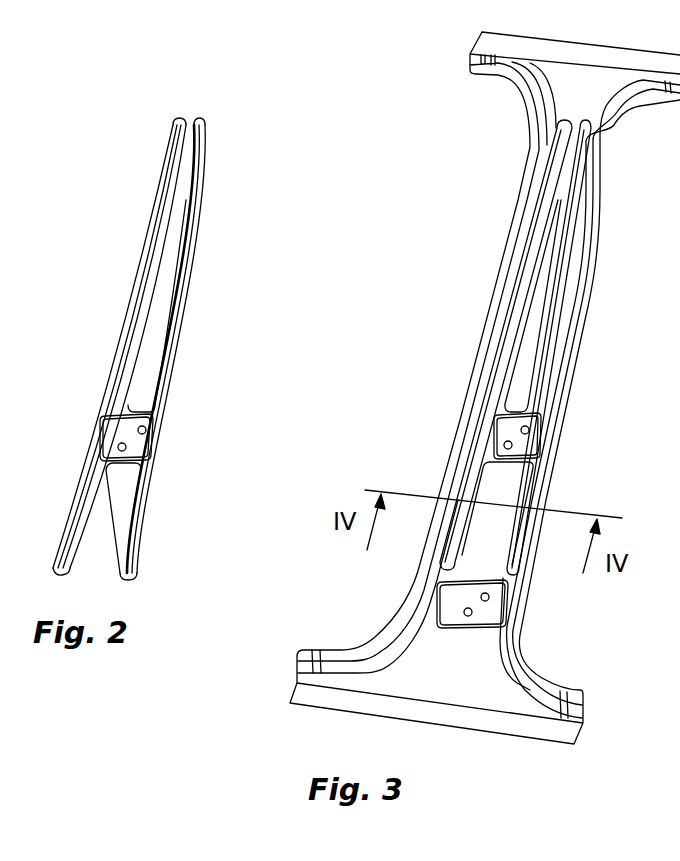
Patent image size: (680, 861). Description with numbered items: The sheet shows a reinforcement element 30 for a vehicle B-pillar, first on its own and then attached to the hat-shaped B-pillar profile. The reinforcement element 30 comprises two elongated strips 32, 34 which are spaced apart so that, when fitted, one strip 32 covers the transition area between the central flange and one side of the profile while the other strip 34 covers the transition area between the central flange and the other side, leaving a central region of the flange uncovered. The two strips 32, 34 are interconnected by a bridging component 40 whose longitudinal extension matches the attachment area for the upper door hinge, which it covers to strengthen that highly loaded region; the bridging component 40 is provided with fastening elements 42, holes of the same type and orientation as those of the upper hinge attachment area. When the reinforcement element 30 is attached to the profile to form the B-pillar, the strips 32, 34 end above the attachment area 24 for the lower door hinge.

In FIG. 2, the reinforcement element 30 is at (245, 186).
In FIG. 2, the strip 32 is at (143, 300).
In FIG. 3, the strip 32 is at (477, 487).
In FIG. 2, the strip 34 is at (190, 257).
In FIG. 3, the strip 34 is at (525, 492).
In FIG. 2, the bridging component 40 is at (120, 428).
In FIG. 2, the fastening elements 42 is at (123, 447).
In FIG. 3, the attachment area 24 is at (487, 610).